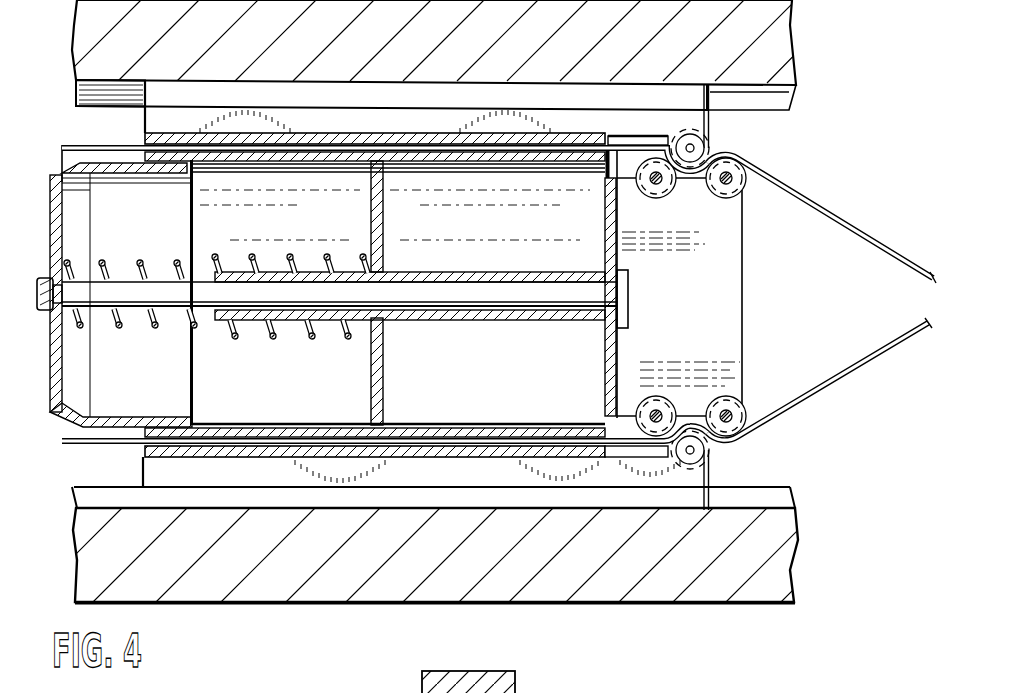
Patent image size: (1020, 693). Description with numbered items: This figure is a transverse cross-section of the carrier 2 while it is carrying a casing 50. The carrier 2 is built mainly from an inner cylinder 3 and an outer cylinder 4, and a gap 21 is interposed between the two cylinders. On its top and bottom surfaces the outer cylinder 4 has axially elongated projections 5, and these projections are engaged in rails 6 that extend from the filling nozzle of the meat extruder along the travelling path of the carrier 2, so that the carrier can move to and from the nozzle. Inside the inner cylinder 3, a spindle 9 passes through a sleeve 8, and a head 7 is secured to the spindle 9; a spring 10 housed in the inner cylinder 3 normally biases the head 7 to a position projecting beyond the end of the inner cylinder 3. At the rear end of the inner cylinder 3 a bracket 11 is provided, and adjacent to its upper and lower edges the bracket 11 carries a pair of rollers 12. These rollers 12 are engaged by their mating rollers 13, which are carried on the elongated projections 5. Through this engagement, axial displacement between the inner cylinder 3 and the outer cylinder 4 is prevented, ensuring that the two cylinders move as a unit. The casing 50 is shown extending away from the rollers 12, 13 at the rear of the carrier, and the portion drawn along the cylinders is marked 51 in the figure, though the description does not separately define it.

The carrier 2 is at (438, 366).
The inner cylinder 3 is at (434, 158).
The outer cylinder 4 is at (556, 144).
The axially elongated projections 5 is at (389, 96).
The rails 6 is at (295, 590).
The head 7 is at (50, 247).
The sleeve 8 is at (447, 274).
The spindle 9 is at (271, 286).
The spring 10 is at (214, 262).
The bracket 11 is at (727, 302).
The rollers 12 is at (717, 192).
The mating rollers 13 is at (712, 146).
The gap 21 is at (609, 137).
The casing 50 is at (884, 248).
The belt run 51 is at (66, 146).